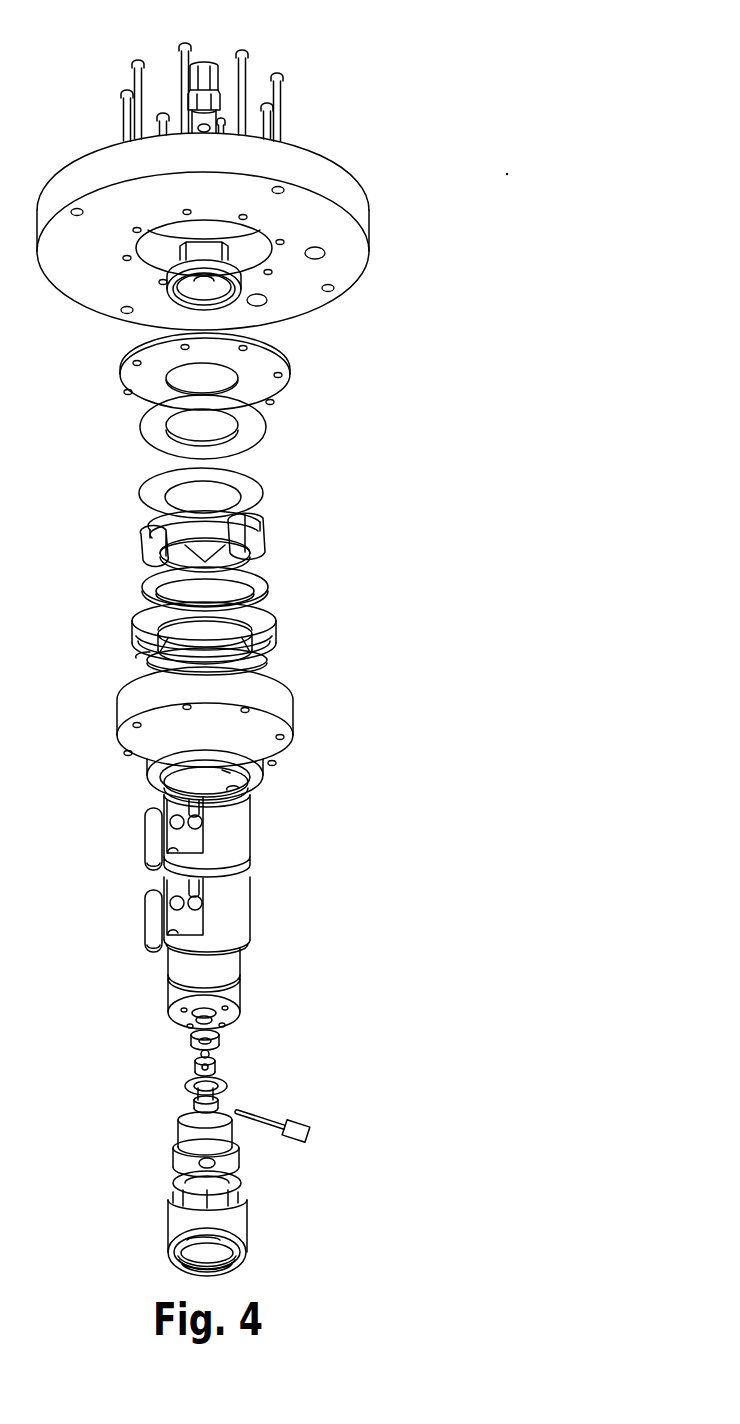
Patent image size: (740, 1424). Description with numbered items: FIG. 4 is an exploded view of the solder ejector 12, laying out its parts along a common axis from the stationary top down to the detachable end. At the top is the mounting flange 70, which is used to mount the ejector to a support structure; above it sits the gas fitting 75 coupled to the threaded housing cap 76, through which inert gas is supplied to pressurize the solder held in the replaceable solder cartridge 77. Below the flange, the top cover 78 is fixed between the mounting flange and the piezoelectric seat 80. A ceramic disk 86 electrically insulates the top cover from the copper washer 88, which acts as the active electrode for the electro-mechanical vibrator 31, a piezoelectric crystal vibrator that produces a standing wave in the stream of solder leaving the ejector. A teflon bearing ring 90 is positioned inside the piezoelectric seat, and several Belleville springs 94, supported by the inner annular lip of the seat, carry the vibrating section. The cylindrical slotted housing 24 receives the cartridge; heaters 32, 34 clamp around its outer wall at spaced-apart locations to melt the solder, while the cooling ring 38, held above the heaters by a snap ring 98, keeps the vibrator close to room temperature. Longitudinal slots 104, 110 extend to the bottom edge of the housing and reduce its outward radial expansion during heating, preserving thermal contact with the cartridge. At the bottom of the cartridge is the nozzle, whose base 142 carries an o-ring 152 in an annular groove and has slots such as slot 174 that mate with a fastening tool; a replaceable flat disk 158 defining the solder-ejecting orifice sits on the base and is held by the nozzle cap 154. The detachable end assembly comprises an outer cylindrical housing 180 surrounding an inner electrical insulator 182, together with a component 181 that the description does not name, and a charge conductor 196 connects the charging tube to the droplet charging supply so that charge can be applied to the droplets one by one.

The solder ejector 12 is at (195, 1233).
The cylindrical slotted housing 24 is at (268, 593).
The electro-mechanical vibrator 31 is at (199, 541).
The heater 32 is at (147, 921).
The heater 34 is at (147, 823).
The cooling ring 38 is at (262, 779).
The top mounting flange 70 is at (350, 275).
The gas fitting 75 is at (203, 62).
The threaded housing cap 76 is at (166, 289).
The replaceable solder cartridge 77 is at (262, 1000).
The top cover 78 is at (290, 396).
The piezoelectric seat 80 is at (293, 731).
The electrically insulating ceramic disk 86 is at (262, 446).
The copper washer 88 is at (263, 503).
The teflon bearing ring 90 is at (276, 641).
The Belleville springs 94 is at (147, 552).
The snap ring 98 is at (250, 799).
The longitudinal slot 104 is at (268, 671).
The longitudinal slot 110 is at (137, 666).
The base 142 is at (216, 1037).
The o-ring 152 is at (226, 1016).
The nozzle cap 154 is at (215, 1065).
The replaceable flat disk 158 is at (199, 1056).
The slot 174 is at (191, 1104).
The outer cylindrical housing 180 is at (170, 1216).
The ring 181 is at (245, 1188).
The inner electrical insulator 182 is at (171, 1158).
The charge conductor 196 is at (310, 1134).